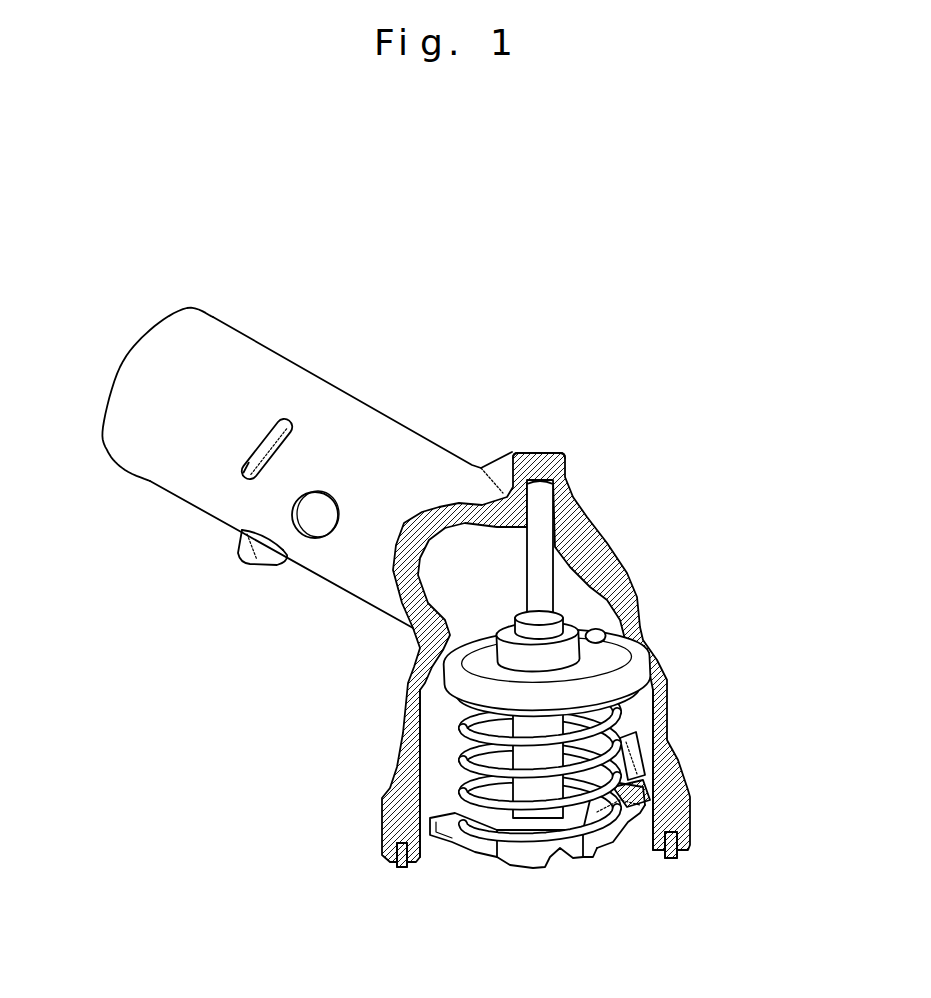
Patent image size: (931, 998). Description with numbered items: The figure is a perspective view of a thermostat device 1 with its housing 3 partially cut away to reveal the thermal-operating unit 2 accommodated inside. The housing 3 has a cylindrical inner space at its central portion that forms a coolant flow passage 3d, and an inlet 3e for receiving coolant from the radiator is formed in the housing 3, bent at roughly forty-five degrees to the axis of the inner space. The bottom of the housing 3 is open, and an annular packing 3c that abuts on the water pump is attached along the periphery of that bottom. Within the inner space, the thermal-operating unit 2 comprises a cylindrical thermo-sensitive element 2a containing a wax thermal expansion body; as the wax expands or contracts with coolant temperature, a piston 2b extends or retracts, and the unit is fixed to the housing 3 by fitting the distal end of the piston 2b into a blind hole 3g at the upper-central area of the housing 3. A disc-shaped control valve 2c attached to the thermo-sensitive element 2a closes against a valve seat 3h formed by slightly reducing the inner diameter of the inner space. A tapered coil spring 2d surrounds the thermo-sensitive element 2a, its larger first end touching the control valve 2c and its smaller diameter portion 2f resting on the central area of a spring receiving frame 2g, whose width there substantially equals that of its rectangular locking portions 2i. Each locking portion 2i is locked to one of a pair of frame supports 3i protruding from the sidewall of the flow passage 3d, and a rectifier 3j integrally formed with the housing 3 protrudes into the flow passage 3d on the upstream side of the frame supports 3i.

The thermostat device 1 is at (628, 388).
The thermal-operating unit 2 is at (435, 728).
The thermo-sensitive element 2a is at (535, 792).
The piston 2b is at (575, 527).
The control valve 2c is at (652, 654).
The spring 2d is at (470, 768).
The smaller diameter portion 2f is at (567, 833).
The spring receiving frame 2g is at (530, 870).
The locking portions 2i is at (483, 862).
The housing 3 is at (613, 572).
The annular packing 3c is at (683, 865).
The coolant flow passage 3d is at (635, 703).
The inlet 3e is at (123, 362).
The blind hole 3g is at (539, 488).
The valve seat 3h is at (460, 687).
The frame supports 3i is at (670, 780).
The rectifier 3j is at (650, 748).